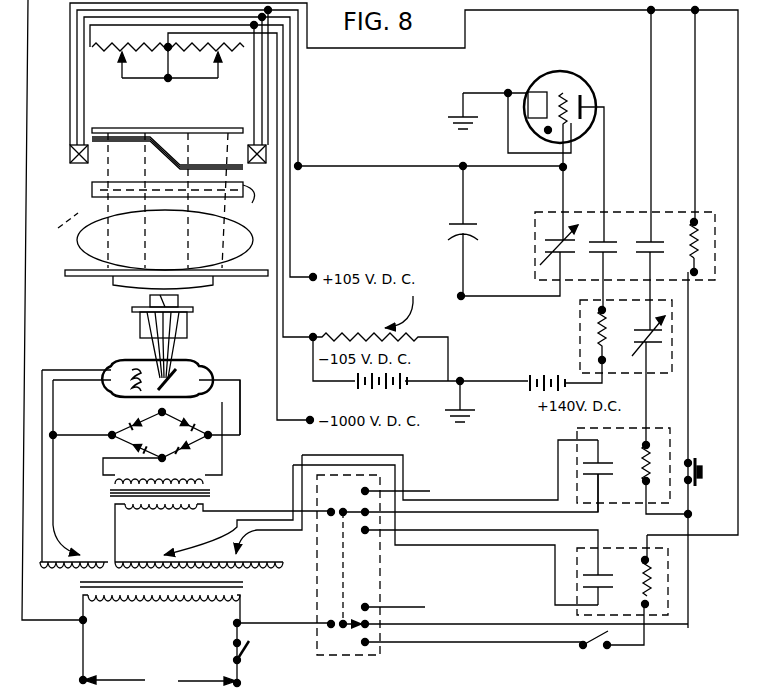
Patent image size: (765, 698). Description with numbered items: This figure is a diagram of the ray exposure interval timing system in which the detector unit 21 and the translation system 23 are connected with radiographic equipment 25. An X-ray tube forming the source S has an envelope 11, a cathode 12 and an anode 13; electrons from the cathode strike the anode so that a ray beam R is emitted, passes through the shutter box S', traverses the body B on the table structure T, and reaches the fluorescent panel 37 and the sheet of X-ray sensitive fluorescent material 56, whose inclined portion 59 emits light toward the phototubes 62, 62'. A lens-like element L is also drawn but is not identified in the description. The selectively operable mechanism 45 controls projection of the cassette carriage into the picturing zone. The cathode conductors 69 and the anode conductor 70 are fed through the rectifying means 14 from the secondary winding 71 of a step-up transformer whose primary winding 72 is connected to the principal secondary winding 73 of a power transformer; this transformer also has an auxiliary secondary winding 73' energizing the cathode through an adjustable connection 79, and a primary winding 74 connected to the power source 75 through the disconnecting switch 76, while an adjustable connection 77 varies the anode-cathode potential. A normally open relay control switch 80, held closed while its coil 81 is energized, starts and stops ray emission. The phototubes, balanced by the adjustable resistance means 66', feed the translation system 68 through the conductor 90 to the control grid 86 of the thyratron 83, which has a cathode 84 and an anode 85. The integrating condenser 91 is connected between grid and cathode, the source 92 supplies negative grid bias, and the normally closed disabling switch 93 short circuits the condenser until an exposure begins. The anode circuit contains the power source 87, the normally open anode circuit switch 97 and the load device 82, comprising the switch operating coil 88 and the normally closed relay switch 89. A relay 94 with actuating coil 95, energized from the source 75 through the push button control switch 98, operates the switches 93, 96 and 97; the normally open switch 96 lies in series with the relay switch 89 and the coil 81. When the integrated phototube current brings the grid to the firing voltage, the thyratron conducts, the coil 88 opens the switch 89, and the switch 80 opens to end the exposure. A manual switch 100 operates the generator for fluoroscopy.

The adjustable resistance means 66' is at (168, 72).
The fluorescent panel 37 is at (131, 127).
The inclined sheet portion 59 is at (176, 142).
The sheet of X-ray sensitive fluorescent material 56 is at (201, 156).
The phototube device 62 is at (65, 162).
The phototube device 62' is at (287, 170).
The ray sensitive detector unit 21 is at (110, 156).
The selectively operable mechanism 45 is at (255, 203).
The conductor 90 is at (324, 165).
The translation system 68 is at (411, 148).
The thyratron tube 83 is at (577, 76).
The cathode 84 is at (540, 88).
The control grid 86 is at (560, 92).
The anode 85 is at (582, 101).
The integrating condenser 91 is at (470, 222).
The disabling switch 93 is at (548, 236).
The anode circuit switch 97 is at (612, 230).
The normally open switch 96 is at (657, 230).
The actuating coil 95 is at (703, 230).
The relay 94 is at (526, 268).
The source of negative grid biasing potential 92 is at (399, 332).
The power source 87 is at (541, 377).
The normally closed relay switch 89 is at (606, 342).
The switch operating coil 88 is at (621, 350).
The load device 82 is at (659, 380).
The cathode conductors 69 is at (60, 388).
The envelope 11 is at (190, 364).
The cathode 12 is at (128, 389).
The anode 13 is at (178, 389).
The anode conductor 70 is at (239, 401).
The rectifying means 14 is at (145, 442).
The secondary winding 71 is at (205, 481).
The primary winding 72 is at (123, 501).
The radiographic equipment 25 is at (251, 444).
The adjustable connection 79 is at (78, 543).
The adjustable connection 77 is at (250, 537).
The principal secondary winding 73 is at (186, 585).
The auxiliary secondary winding 73' is at (73, 586).
The primary winding 74 is at (153, 604).
The power source 75 is at (160, 655).
The disconnecting switch 76 is at (233, 661).
The control switch 80 is at (599, 465).
The coil 81 is at (640, 470).
The control switch 98 is at (700, 478).
The translation system 23 is at (489, 448).
The manual switch 100 is at (596, 650).
The lens L is at (67, 227).
The object B is at (165, 240).
The table structure T is at (75, 279).
The X-rays R is at (196, 283).
The source of penetrating rays S is at (104, 343).
The shutter box S' is at (177, 336).